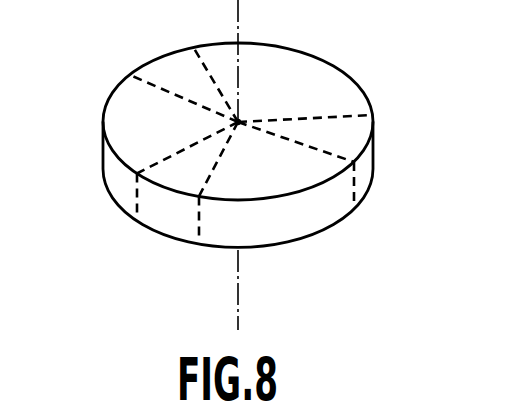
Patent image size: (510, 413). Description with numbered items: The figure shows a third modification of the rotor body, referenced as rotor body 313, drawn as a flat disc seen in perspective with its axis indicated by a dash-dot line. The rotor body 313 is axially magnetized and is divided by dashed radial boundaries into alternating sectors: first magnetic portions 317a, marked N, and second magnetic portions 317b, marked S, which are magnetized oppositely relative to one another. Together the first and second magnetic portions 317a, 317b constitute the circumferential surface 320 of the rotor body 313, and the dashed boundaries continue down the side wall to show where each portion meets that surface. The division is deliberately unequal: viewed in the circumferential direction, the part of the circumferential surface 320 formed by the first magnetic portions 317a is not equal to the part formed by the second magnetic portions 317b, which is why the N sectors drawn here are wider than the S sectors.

The rotor body 313 is at (125, 93).
The first magnetic portions 317a is at (117, 127).
The second magnetic portions 317b is at (162, 63).
The circumferential surface 320 is at (117, 177).